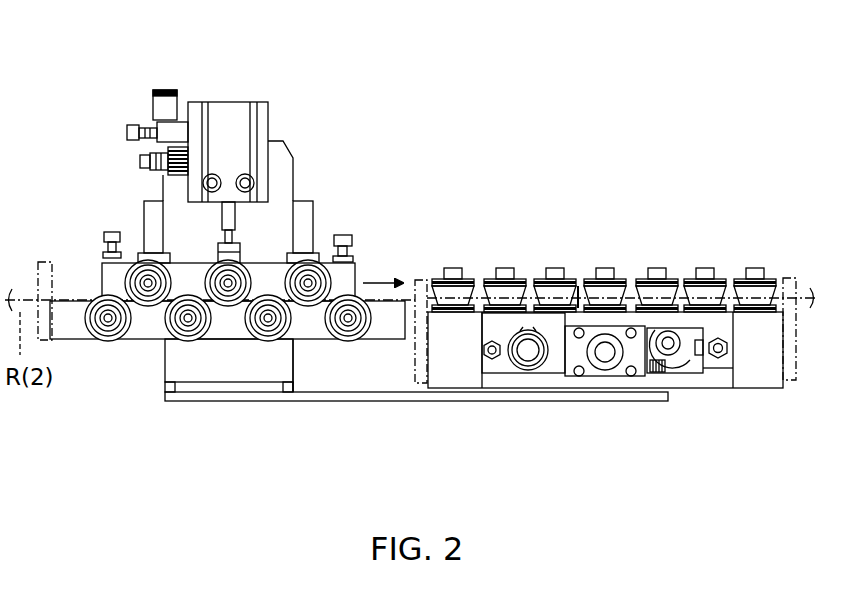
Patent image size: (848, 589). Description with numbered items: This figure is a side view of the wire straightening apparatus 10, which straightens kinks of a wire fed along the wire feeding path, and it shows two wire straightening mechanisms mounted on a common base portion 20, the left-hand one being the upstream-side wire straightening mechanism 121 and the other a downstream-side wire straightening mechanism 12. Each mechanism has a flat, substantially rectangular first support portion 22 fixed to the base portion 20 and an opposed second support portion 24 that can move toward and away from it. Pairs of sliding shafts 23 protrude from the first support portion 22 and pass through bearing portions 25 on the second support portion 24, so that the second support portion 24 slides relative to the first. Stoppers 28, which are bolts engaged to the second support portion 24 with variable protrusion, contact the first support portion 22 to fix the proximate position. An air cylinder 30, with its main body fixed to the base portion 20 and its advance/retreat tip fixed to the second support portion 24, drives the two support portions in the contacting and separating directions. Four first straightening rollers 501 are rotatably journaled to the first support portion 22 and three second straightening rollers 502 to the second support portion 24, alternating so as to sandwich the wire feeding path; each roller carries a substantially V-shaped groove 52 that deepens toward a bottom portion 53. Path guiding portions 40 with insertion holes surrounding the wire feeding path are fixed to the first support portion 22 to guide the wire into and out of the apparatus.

The wire straightening apparatus 10 is at (48, 70).
The upstream-side wire straightening mechanism 121 is at (93, 176).
The second roller unit 12 is at (481, 193).
The air cylinder 30 is at (235, 103).
The sliding shaft 23 is at (148, 208).
The bearing portion 25 is at (143, 256).
The stopper 28 is at (110, 240).
The path guiding portion 40 is at (45, 265).
The second support portion 24 is at (102, 280).
The first support portion 22 is at (80, 333).
The second straightening roller 502 is at (222, 263).
The first straightening roller 501 is at (283, 263).
The groove 52 is at (555, 288).
The bottom portion 53 is at (572, 290).
The base portion 20 is at (340, 397).